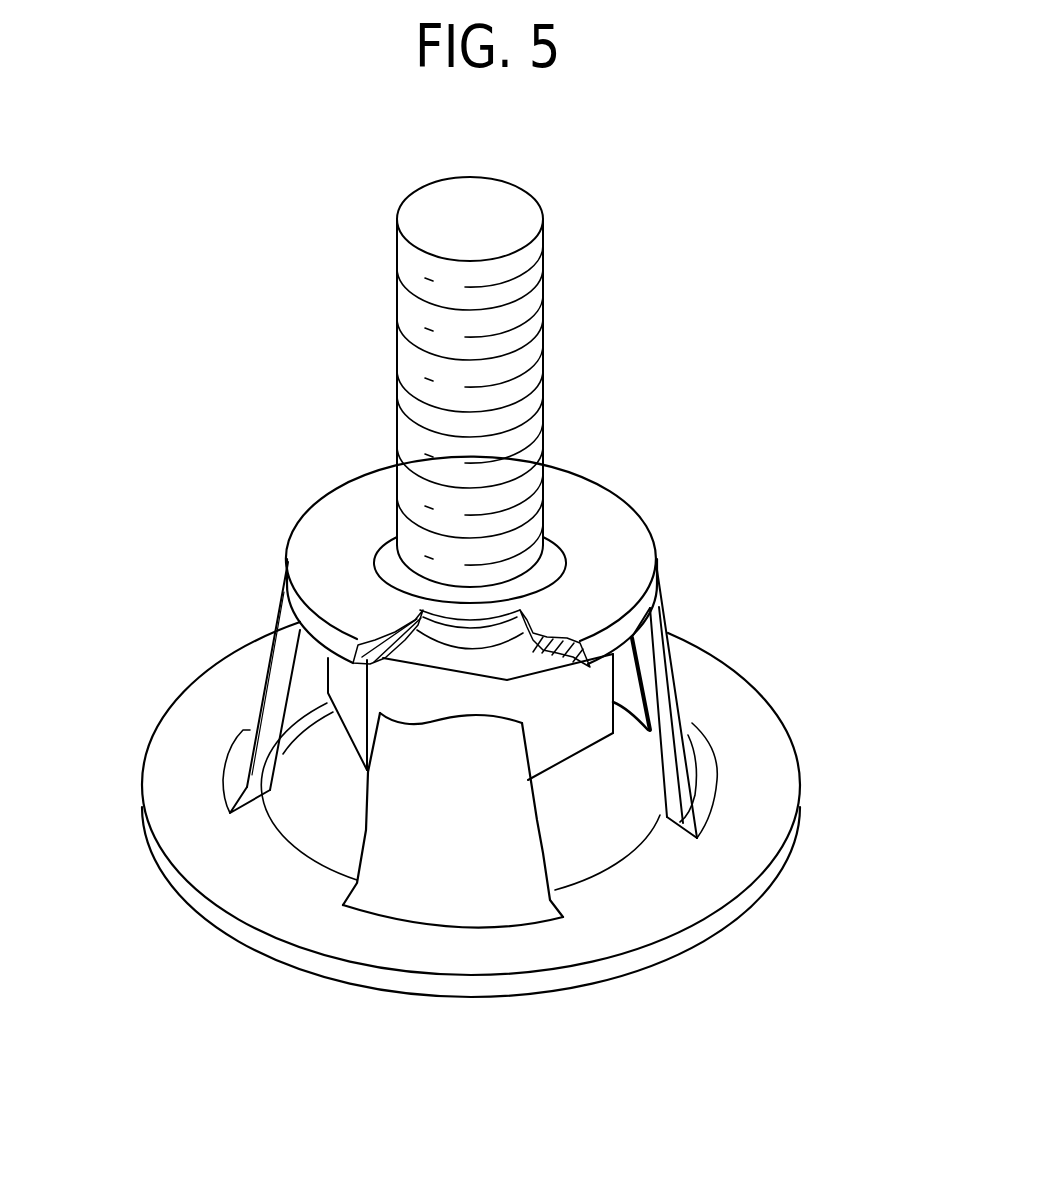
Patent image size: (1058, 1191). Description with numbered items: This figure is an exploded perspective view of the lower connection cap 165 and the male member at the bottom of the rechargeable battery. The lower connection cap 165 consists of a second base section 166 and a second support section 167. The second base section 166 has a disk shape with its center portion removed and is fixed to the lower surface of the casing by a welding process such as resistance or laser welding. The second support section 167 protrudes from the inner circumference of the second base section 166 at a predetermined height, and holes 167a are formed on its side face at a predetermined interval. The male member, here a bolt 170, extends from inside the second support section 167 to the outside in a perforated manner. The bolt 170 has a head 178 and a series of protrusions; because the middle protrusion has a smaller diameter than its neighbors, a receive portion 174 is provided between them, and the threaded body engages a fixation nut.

The lower connection cap 165 is at (870, 603).
The second base section 166 is at (753, 717).
The second support section 167 is at (667, 647).
The holes 167a is at (660, 733).
The bolt 170 is at (345, 697).
The receive portion 174 is at (471, 606).
The head 178 is at (593, 713).